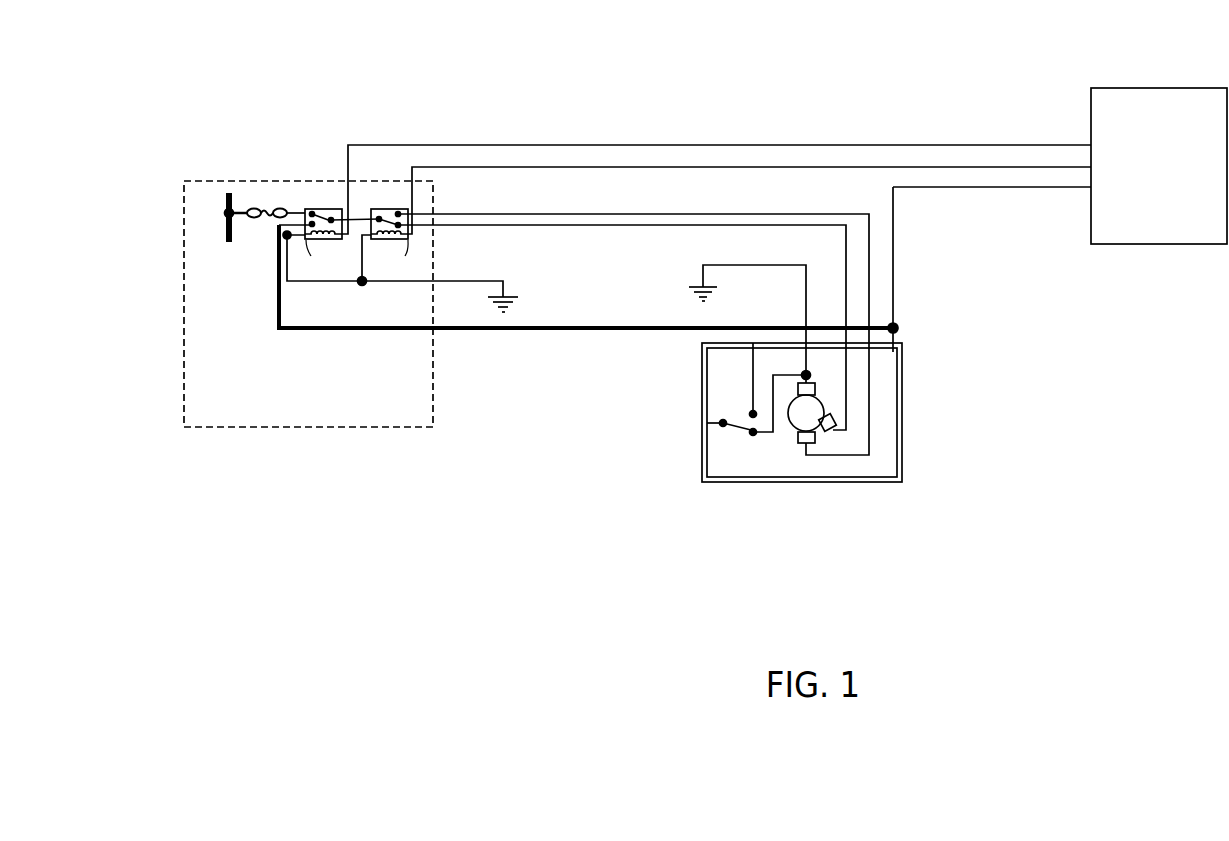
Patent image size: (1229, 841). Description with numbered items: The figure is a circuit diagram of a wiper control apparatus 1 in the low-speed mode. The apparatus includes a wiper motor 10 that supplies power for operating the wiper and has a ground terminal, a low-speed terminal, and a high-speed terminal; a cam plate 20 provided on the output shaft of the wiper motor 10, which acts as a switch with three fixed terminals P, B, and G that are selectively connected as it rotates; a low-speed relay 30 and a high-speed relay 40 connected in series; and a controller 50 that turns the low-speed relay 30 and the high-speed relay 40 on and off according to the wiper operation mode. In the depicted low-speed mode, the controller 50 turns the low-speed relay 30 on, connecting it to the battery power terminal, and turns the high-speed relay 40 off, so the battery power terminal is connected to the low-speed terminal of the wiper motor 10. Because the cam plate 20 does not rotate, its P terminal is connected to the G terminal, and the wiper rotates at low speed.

The wiper motor control system 1 is at (712, 82).
The wiper motor 10 is at (790, 430).
The cam plate 20 is at (735, 429).
The low-speed relay 30 is at (311, 209).
The high-speed relay 40 is at (379, 208).
The controller 50 is at (1173, 244).